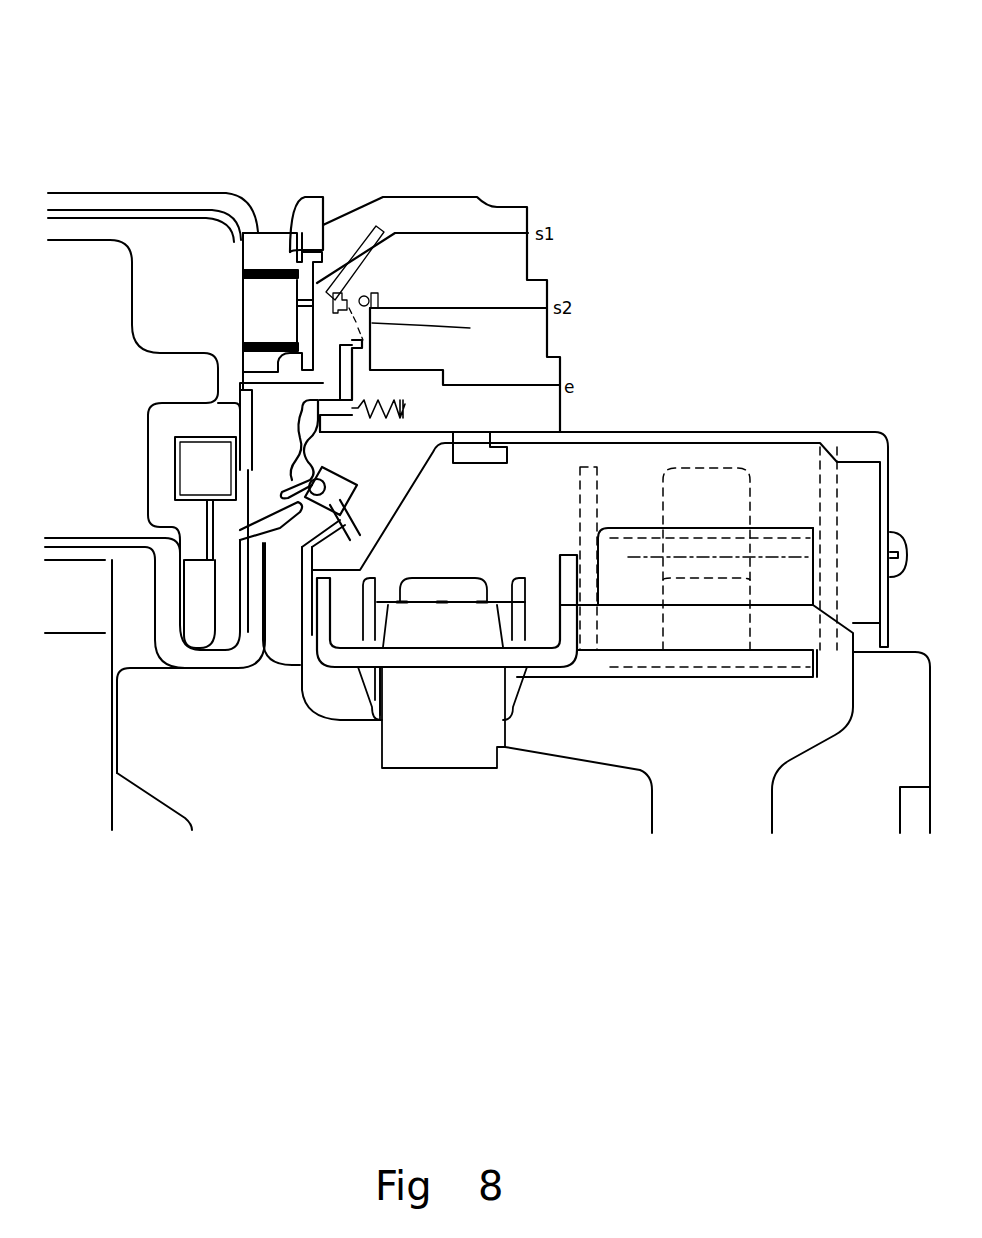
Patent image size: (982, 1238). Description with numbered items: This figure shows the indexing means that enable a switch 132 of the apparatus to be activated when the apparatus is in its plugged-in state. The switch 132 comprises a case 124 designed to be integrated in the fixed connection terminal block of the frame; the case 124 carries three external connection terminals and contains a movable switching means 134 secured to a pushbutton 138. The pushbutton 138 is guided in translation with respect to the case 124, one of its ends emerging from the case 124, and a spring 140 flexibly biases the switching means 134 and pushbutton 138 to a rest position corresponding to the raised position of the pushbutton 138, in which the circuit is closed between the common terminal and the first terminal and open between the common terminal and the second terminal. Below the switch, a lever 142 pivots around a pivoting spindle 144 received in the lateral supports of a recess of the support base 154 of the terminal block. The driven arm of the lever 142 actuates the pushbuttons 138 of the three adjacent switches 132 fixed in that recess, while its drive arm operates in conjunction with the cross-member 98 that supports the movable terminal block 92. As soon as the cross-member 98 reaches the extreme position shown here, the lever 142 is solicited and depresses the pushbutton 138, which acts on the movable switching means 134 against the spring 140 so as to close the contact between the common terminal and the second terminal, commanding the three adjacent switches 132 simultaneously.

The support base 154 is at (267, 273).
The case 124 is at (437, 210).
The switch 132 is at (617, 255).
The movable switching means 134 is at (372, 323).
The spring 140 is at (407, 410).
The pushbutton 138 is at (337, 410).
The lever 142 is at (298, 432).
The pivoting spindle 144 is at (327, 513).
The cross-member 98 is at (330, 653).
The movable terminal block 92 is at (438, 770).